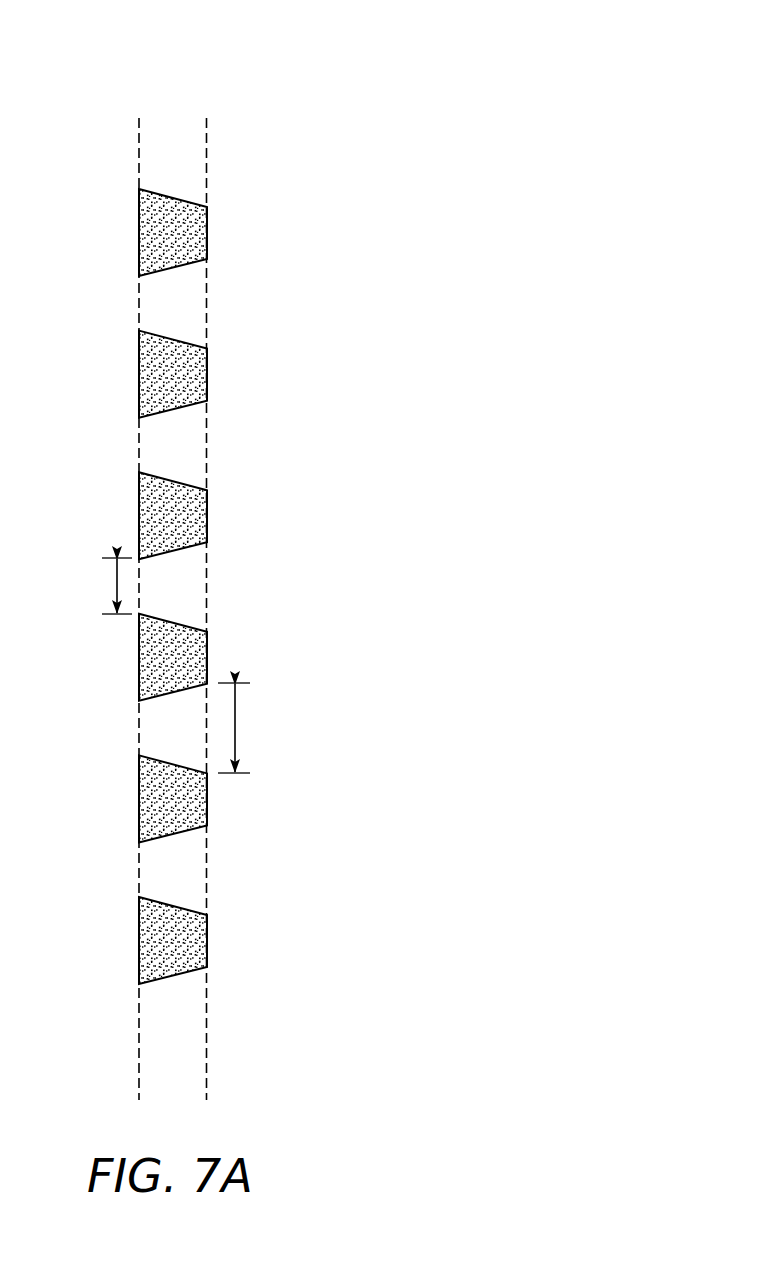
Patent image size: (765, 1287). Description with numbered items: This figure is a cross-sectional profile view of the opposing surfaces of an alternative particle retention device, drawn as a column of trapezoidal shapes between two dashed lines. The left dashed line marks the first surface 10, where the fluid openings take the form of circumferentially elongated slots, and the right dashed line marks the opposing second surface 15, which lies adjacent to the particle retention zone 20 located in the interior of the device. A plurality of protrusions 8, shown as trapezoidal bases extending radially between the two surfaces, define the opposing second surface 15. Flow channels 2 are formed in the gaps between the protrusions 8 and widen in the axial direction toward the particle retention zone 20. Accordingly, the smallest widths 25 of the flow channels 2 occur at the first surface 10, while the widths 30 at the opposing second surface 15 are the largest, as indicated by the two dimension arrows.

The particle retention zone 20 is at (364, 79).
The first surface 10 is at (139, 152).
The opposing second surface 15 is at (207, 153).
The protrusions 8 is at (207, 235).
The flow channels 2 is at (148, 445).
The smallest widths 25 is at (104, 586).
The widths of flow channels 30 is at (243, 728).